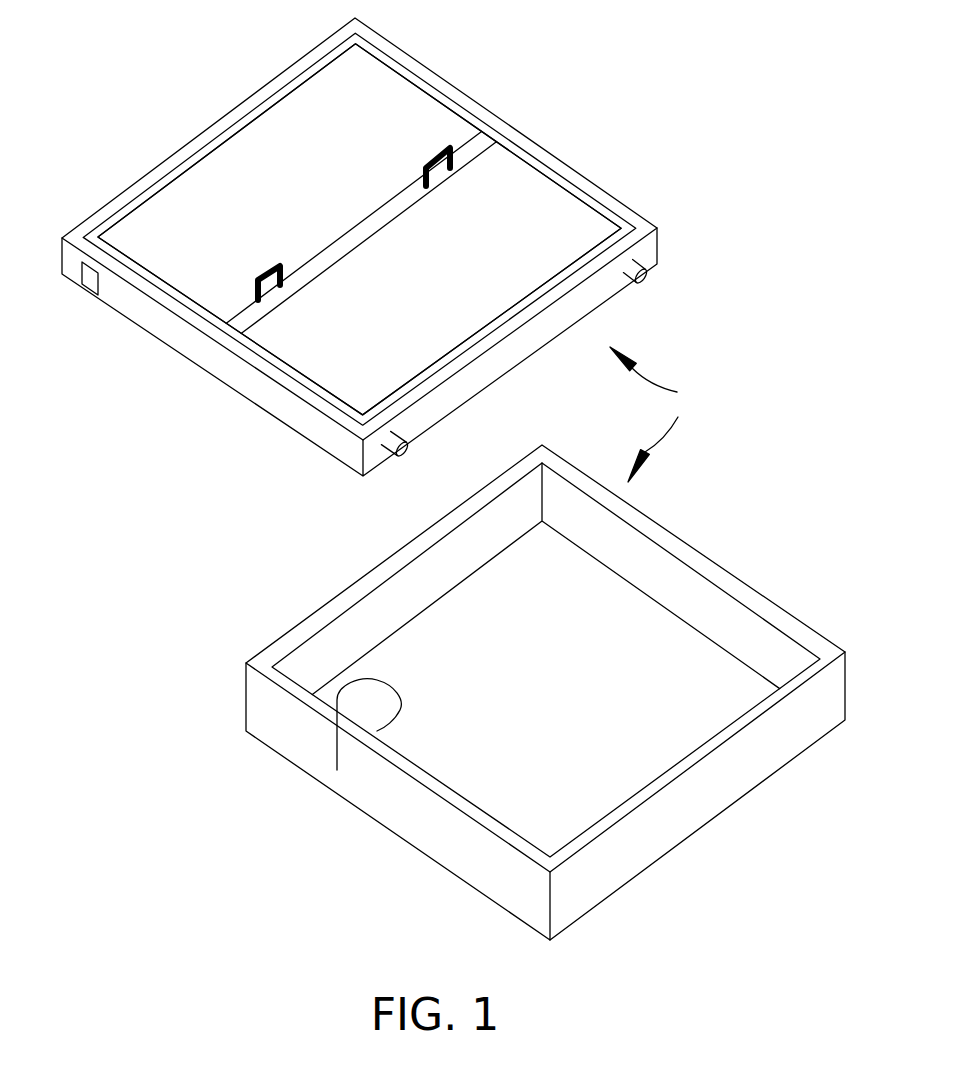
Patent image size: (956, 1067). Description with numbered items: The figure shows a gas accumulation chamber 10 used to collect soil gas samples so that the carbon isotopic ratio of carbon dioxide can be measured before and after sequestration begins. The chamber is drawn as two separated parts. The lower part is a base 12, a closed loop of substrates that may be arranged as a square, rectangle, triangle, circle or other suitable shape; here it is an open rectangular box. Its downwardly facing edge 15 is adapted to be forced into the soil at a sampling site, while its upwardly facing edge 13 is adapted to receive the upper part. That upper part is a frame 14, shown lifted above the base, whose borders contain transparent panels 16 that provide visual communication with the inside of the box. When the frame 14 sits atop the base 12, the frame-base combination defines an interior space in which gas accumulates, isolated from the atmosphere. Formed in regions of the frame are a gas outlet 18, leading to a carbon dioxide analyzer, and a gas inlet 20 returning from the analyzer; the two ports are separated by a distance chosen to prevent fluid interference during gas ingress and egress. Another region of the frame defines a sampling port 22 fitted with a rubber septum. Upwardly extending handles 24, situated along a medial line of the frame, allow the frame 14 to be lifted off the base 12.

The gas accumulation chamber 10 is at (425, 479).
The base 12 is at (484, 692).
The upwardly facing edge 13 is at (337, 770).
The frame 14 is at (613, 200).
The downwardly facing edge 15 is at (722, 820).
The transparent panels 16 is at (272, 204).
The gas outlet 18 is at (412, 451).
The gas inlet 20 is at (650, 284).
The sampling port 22 is at (82, 285).
The handles 24 is at (443, 151).